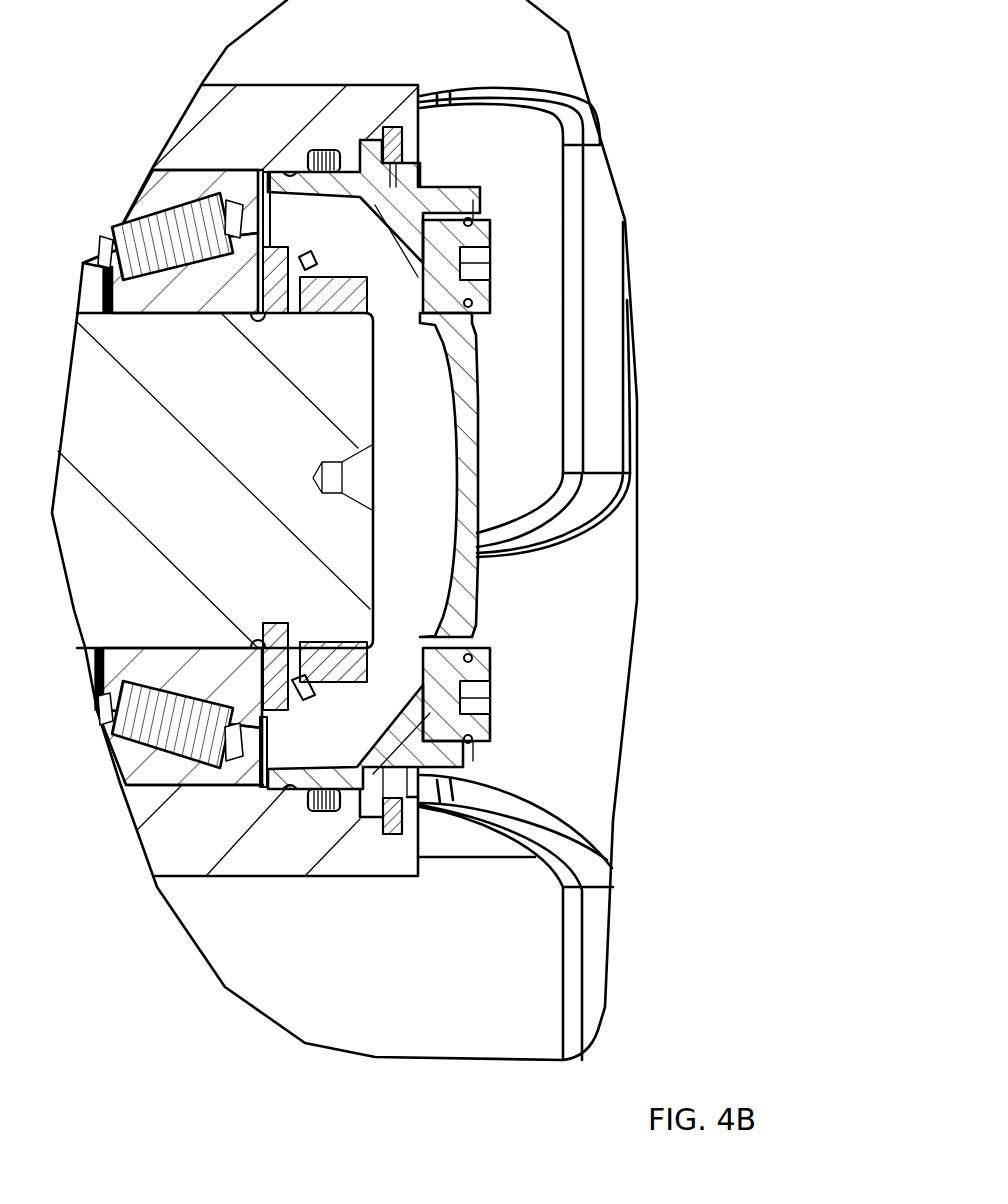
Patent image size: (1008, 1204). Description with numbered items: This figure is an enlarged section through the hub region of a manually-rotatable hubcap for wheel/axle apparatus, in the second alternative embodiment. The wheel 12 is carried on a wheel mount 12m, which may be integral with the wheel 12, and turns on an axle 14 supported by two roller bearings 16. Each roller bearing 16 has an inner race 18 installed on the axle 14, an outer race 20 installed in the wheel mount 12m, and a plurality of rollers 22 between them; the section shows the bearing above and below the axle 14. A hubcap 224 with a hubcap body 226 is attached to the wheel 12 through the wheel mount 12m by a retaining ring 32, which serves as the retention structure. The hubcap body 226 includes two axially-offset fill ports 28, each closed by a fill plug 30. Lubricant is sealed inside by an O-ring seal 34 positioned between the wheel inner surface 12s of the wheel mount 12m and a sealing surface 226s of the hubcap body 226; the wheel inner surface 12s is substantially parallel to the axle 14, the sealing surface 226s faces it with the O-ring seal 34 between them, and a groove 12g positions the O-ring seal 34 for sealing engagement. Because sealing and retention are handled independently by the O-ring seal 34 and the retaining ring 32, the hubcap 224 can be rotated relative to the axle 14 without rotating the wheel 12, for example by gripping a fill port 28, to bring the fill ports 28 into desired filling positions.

The wheel 12 is at (613, 445).
The wheel mount 12m is at (258, 140).
The wheel inner surface 12s is at (351, 167).
The groove 12g is at (331, 147).
The axle 14 is at (152, 477).
The roller bearing 16 is at (179, 477).
The outer race 20 is at (207, 200).
The inner race 18 is at (223, 296).
The roller 22 is at (180, 246).
The fill port 28 is at (455, 315).
The fill plug 30 is at (483, 233).
The retaining ring 32 is at (400, 127).
The O-ring seal 34 is at (318, 150).
The hubcap 224 is at (594, 483).
The hubcap body 226 is at (478, 600).
The sealing surface 226s is at (287, 172).